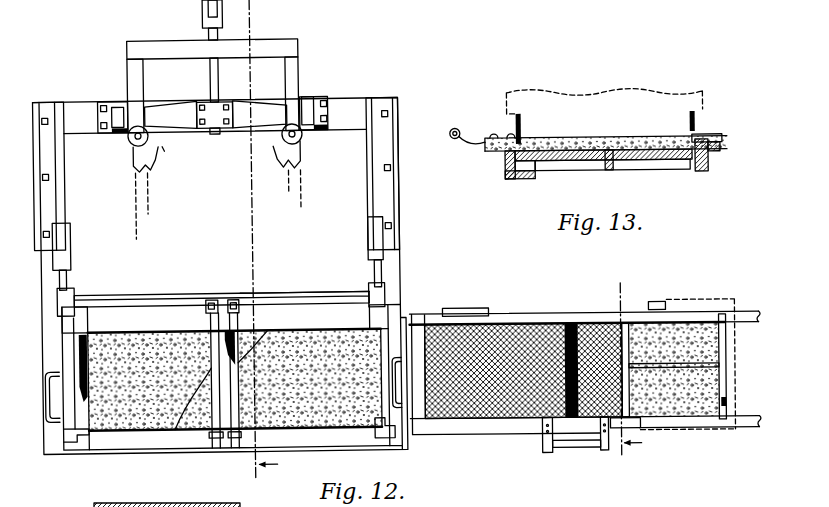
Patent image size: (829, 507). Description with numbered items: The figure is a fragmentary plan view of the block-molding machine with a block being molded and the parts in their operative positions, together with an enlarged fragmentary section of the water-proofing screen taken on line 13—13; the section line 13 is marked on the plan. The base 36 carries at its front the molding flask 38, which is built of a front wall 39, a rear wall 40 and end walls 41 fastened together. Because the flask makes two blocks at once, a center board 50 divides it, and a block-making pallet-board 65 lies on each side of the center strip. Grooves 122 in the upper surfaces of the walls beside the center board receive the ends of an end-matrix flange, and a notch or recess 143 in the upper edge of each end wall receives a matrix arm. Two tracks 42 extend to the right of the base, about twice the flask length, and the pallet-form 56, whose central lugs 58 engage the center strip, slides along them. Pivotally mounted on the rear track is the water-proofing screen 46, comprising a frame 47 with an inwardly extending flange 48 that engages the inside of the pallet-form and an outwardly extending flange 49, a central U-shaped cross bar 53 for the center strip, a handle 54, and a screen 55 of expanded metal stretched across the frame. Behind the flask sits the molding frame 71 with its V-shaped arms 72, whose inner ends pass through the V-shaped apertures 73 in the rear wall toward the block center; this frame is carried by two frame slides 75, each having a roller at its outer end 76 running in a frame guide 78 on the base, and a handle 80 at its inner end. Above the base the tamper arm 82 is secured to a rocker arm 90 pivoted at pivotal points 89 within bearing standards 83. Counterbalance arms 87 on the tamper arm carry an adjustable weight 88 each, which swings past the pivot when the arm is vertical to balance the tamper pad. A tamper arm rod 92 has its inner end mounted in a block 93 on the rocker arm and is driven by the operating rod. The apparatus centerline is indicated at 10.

In FIG. 12, the section line 10 is at (262, 247).
In FIG. 12, the section line 13 is at (627, 373).
In FIG. 12, the base 36 is at (42, 387).
In FIG. 12, the molding flask 38 is at (57, 357).
In FIG. 12, the front wall 39 is at (145, 443).
In FIG. 12, the rear wall 40 is at (138, 306).
In FIG. 12, the end walls 41 is at (62, 342).
In FIG. 12, the tracks 42 is at (762, 298).
In FIG. 13, the tracks 42 is at (507, 165).
In FIG. 12, the water-proofing screen 46 is at (530, 311).
In FIG. 13, the water-proofing screen 46 is at (618, 129).
In FIG. 12, the frame 47 is at (605, 303).
In FIG. 13, the frame 47 is at (717, 135).
In FIG. 13, the inwardly extending flange 48 is at (533, 142).
In FIG. 12, the outwardly extending flange 49 is at (553, 325).
In FIG. 13, the outwardly extending flange 49 is at (693, 114).
In FIG. 12, the center board 50 is at (210, 432).
In FIG. 12, the U-shaped cross bar 53 is at (543, 422).
In FIG. 12, the handle 54 is at (562, 448).
In FIG. 13, the handle 54 is at (455, 127).
In FIG. 12, the screen 55 is at (508, 400).
In FIG. 13, the screen 55 is at (580, 139).
In FIG. 12, the pallet-form 56 is at (722, 352).
In FIG. 13, the lugs 58 is at (532, 164).
In FIG. 12, the block-making pallet-board 65 is at (721, 367).
In FIG. 13, the block-making pallet-board 65 is at (642, 161).
In FIG. 12, the molding frame 71 is at (325, 286).
In FIG. 12, the V-shaped arms 72 is at (233, 294).
In FIG. 12, the V-shaped apertures 73 is at (363, 319).
In FIG. 12, the frame slides 75 is at (58, 279).
In FIG. 12, the outer end 76 is at (64, 253).
In FIG. 12, the frame guide 78 is at (59, 171).
In FIG. 12, the handle 80 is at (48, 399).
In FIG. 12, the tamper arm 82 is at (226, 86).
In FIG. 12, the bearing standards 83 is at (120, 104).
In FIG. 12, the counterbalance arms 87 is at (149, 141).
In FIG. 12, the adjustable weight 88 is at (133, 143).
In FIG. 12, the pivotal points 89 is at (330, 108).
In FIG. 12, the rocker arm 90 is at (185, 92).
In FIG. 12, the tamper arm rod 92 is at (219, 97).
In FIG. 12, the block 93 is at (212, 129).
In FIG. 12, the grooves 122 is at (205, 316).
In FIG. 12, the notch or recess 143 is at (58, 427).